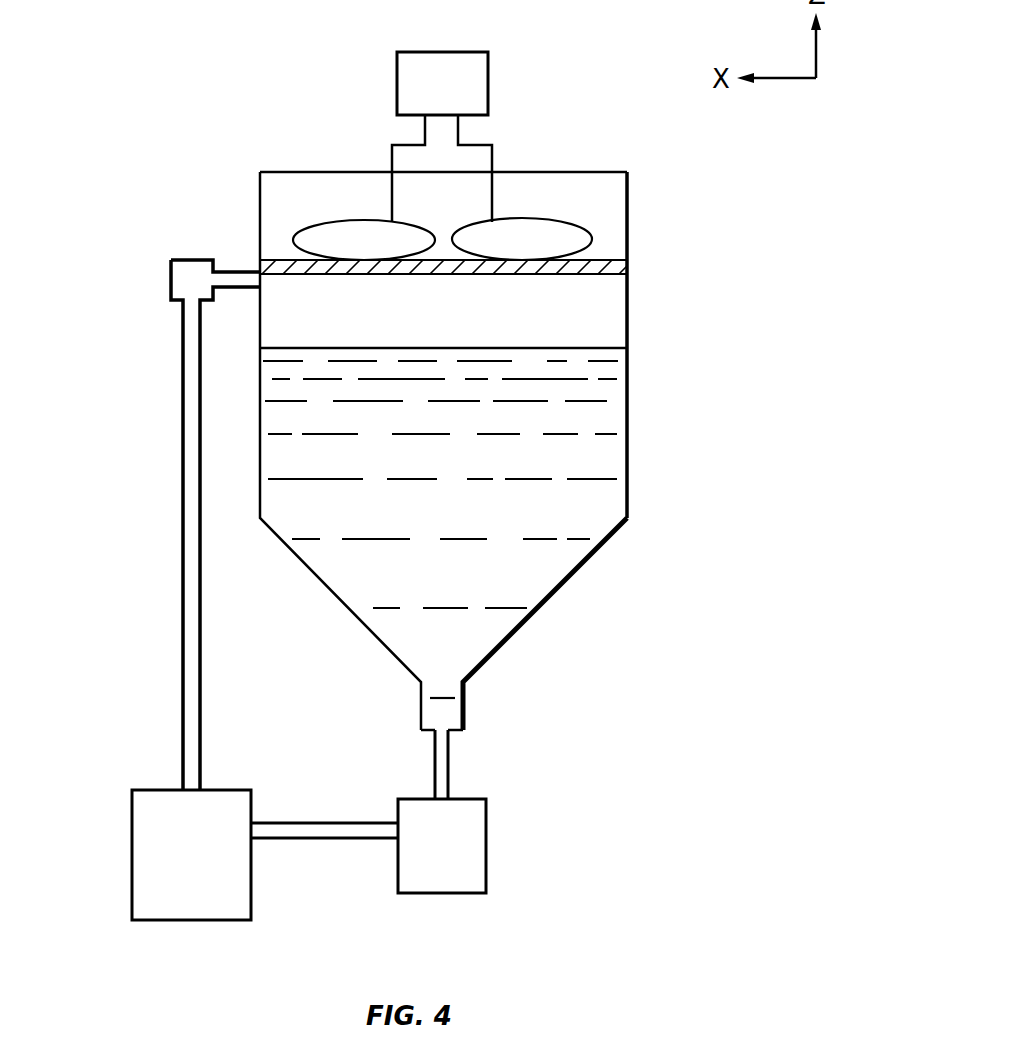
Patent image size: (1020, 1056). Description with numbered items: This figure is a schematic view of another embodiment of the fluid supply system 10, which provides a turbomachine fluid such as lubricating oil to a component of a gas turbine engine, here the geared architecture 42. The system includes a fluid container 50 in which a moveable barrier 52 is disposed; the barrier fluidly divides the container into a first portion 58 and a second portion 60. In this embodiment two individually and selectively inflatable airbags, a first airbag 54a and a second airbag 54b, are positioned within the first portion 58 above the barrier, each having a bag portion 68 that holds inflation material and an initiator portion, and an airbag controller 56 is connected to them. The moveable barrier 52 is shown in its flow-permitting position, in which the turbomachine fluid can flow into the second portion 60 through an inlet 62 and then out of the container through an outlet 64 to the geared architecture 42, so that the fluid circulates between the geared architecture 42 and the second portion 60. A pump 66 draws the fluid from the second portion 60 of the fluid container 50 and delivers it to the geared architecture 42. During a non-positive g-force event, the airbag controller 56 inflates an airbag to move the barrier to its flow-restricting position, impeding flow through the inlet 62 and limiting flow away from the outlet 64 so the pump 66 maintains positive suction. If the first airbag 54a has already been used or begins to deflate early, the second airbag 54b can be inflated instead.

The fluid supply system 10 is at (125, 192).
The geared architecture 42 is at (208, 868).
The fluid container 50 is at (628, 462).
The moveable barrier 52 is at (345, 274).
The first airbag 54a is at (332, 233).
The second airbag 54b is at (560, 232).
The airbag controller 56 is at (458, 97).
The first portion 58 is at (463, 208).
The second portion 60 is at (593, 323).
The inlet 62 is at (230, 268).
The outlet 64 is at (464, 705).
The pump 66 is at (458, 858).
The bag portion 68 is at (357, 220).